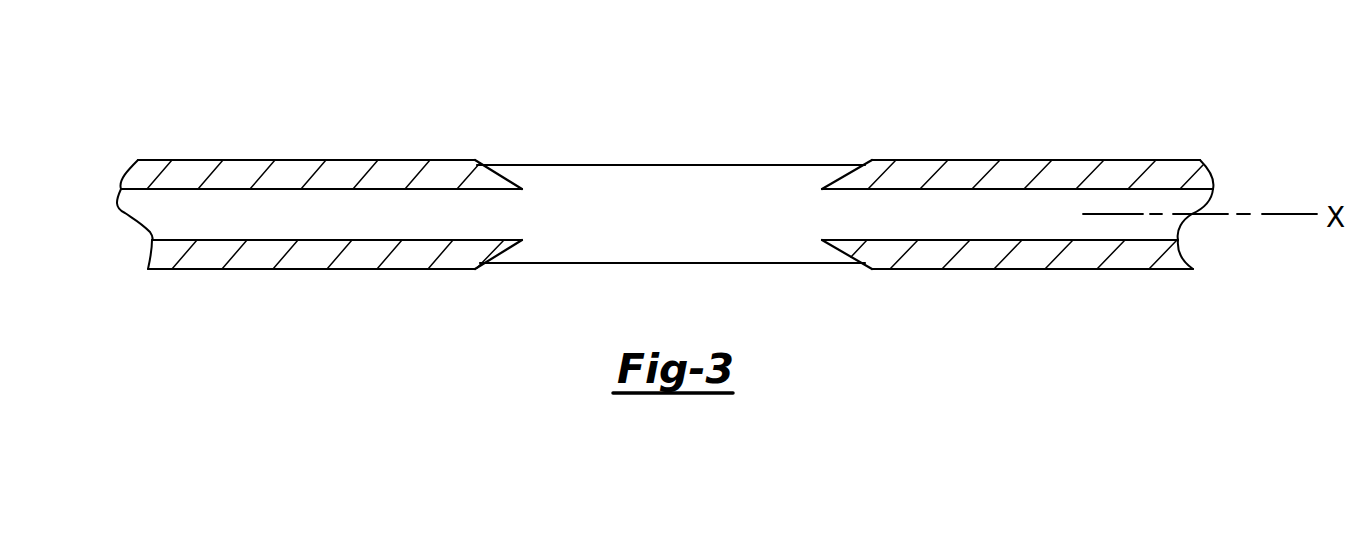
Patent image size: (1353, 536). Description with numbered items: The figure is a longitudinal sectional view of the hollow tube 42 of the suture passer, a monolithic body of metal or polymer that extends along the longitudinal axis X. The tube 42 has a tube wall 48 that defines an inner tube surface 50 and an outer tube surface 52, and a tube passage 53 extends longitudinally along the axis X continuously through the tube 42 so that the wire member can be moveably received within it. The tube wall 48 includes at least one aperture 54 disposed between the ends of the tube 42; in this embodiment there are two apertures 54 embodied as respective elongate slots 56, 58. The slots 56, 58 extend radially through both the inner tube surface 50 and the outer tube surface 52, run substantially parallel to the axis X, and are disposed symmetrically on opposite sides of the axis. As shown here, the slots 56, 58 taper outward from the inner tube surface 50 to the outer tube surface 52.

The hollow tube 42 is at (1020, 158).
The tube wall 48 is at (288, 170).
The inner tube surface 50 is at (159, 189).
The outer tube surface 52 is at (265, 270).
The tube passage 53 is at (228, 220).
The aperture 54 is at (855, 152).
The elongate slot 56 is at (504, 178).
The elongate slot 58 is at (503, 253).